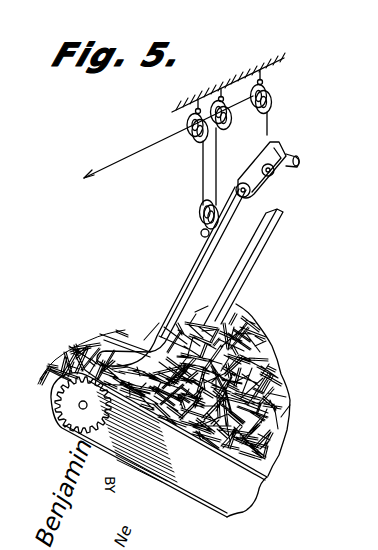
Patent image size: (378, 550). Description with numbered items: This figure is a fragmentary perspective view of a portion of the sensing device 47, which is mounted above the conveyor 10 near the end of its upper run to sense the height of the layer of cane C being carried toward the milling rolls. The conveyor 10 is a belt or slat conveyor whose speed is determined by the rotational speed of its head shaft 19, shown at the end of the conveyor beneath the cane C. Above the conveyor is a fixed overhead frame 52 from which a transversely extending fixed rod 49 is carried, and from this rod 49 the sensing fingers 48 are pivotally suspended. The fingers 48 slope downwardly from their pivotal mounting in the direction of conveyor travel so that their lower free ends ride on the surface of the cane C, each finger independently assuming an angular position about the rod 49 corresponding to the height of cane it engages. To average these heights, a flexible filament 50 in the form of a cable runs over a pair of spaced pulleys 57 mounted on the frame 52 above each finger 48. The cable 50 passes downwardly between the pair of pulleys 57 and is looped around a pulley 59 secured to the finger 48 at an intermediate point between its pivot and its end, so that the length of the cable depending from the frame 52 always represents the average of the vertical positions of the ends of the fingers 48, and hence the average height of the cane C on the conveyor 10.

The fixed overhead frame 52 is at (252, 66).
The pair of spaced pulleys 57 is at (271, 100).
The flexible filament 50 is at (140, 150).
The pulley 59 is at (200, 213).
The sensing fingers 48 is at (196, 257).
The sensing device 47 is at (310, 141).
The fixed rod 49 is at (301, 162).
The cane C is at (255, 322).
The head shaft 19 is at (80, 408).
The conveyor 10 is at (208, 512).